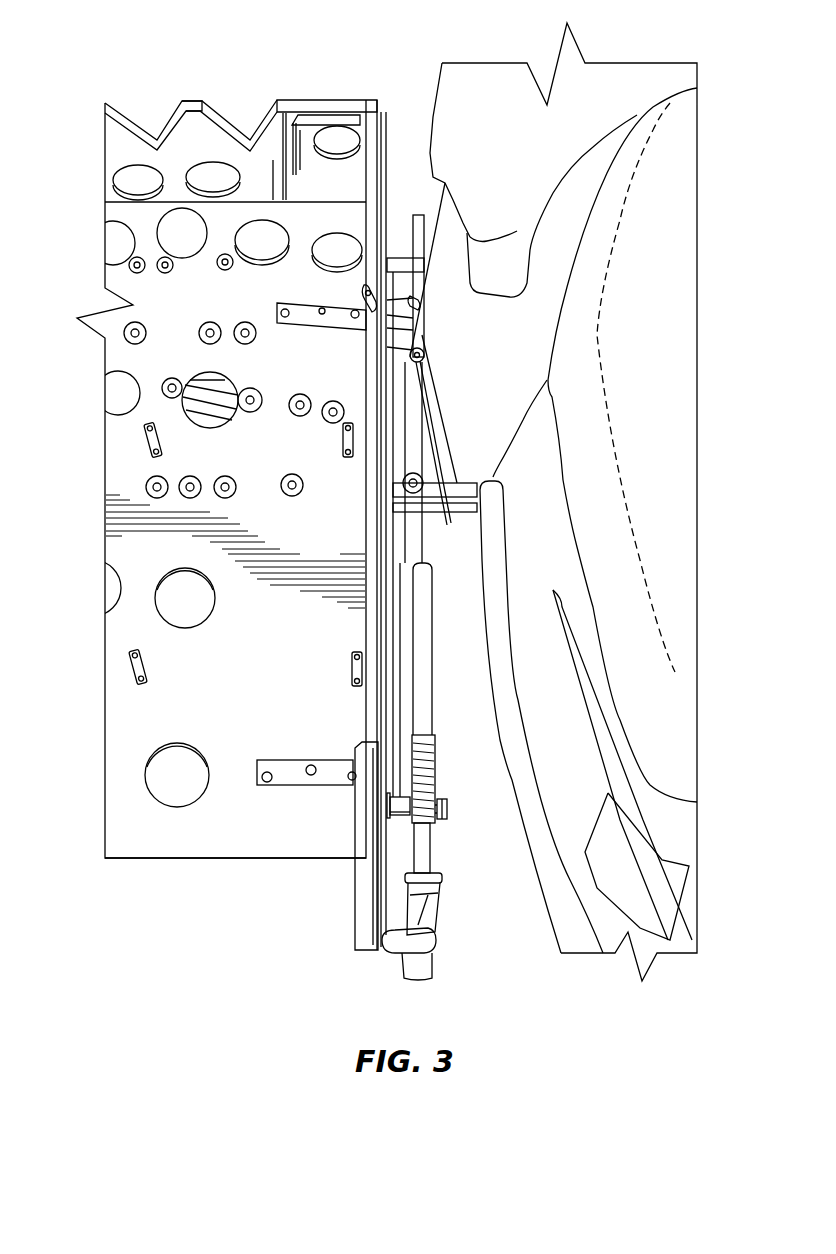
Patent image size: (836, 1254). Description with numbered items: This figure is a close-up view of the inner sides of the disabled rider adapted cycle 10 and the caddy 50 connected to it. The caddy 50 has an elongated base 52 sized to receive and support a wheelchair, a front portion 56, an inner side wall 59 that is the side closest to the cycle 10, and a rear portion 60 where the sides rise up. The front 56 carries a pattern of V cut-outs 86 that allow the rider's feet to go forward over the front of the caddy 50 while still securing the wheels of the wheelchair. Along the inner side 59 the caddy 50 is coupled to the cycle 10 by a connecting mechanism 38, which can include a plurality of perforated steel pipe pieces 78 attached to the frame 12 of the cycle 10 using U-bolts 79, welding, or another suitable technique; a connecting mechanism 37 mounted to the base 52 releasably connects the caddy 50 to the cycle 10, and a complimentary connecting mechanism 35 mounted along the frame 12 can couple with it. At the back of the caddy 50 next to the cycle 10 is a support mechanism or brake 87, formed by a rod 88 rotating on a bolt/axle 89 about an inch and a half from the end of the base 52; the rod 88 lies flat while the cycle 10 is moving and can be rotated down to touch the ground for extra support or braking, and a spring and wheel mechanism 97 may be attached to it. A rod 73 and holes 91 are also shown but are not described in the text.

The disabled rider adapted cycle 10 is at (563, 529).
The frame 12 is at (493, 503).
The complimentary connecting mechanism 35 is at (415, 270).
The connecting mechanism 37 is at (425, 351).
The connecting mechanism 38 is at (457, 497).
The caddy 50 is at (231, 525).
The elongated base 52 is at (235, 554).
The front portion 56 is at (140, 90).
The inner side wall 59 is at (370, 810).
The rear portion 60 is at (115, 866).
The rod 73 is at (406, 486).
The perforated steel pipe pieces 78 is at (311, 544).
The U-bolts 79 is at (293, 403).
The V cut-outs 86 is at (183, 88).
The support mechanism or brake 87 is at (422, 722).
The rod 88 is at (422, 660).
The bolt/axle 89 is at (447, 808).
The apertures 91 is at (343, 253).
The spring and wheel mechanism 97 is at (436, 896).